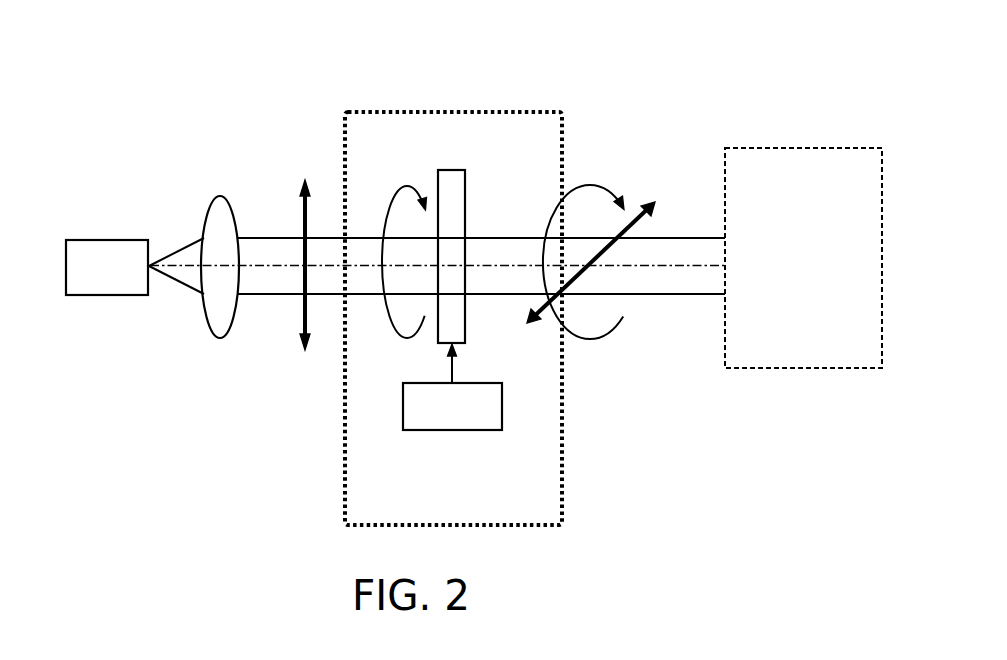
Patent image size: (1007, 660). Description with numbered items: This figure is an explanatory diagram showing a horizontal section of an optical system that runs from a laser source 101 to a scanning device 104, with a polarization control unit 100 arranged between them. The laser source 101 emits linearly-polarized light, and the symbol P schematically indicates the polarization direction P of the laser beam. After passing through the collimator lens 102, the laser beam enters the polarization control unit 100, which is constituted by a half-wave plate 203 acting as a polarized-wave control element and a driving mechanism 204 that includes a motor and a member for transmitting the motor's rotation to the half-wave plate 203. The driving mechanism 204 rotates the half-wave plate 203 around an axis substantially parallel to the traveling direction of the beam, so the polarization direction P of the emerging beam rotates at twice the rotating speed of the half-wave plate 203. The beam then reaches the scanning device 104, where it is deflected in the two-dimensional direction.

The laser source 101 is at (89, 275).
The collimator lens 102 is at (222, 223).
The polarization direction P is at (303, 177).
The polarization control unit 100 is at (463, 112).
The ½-wave plate 203 is at (458, 185).
The driving mechanism 204 is at (457, 415).
The scanning device 104 is at (808, 148).